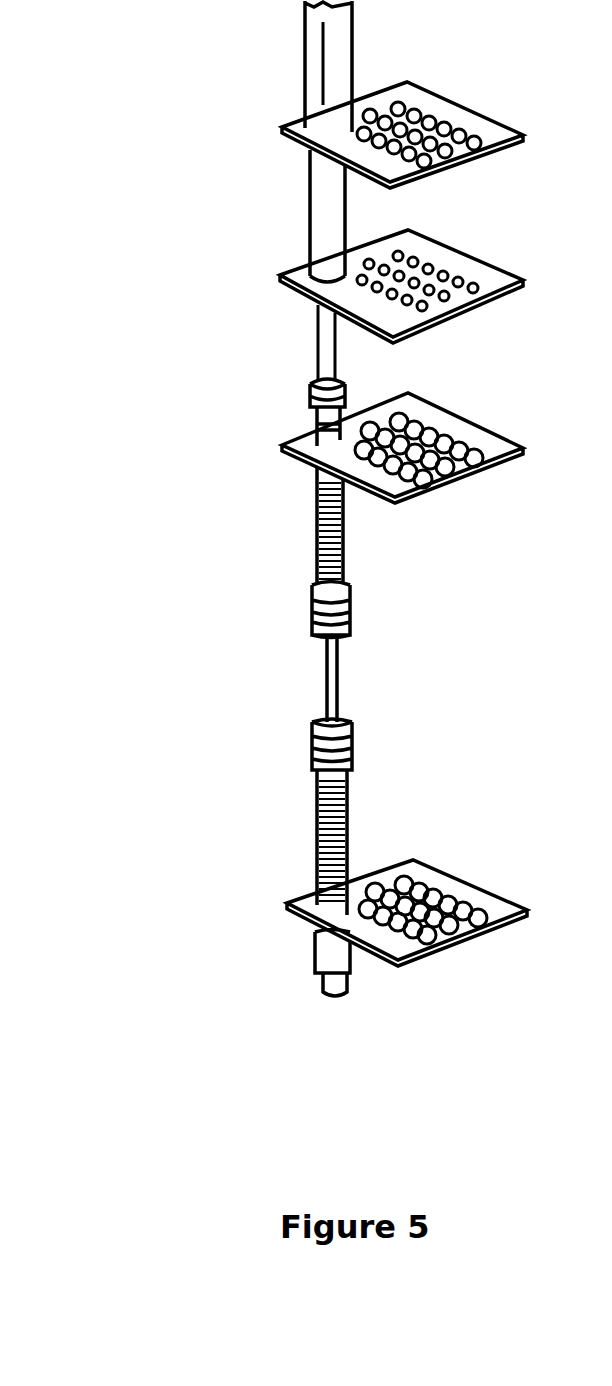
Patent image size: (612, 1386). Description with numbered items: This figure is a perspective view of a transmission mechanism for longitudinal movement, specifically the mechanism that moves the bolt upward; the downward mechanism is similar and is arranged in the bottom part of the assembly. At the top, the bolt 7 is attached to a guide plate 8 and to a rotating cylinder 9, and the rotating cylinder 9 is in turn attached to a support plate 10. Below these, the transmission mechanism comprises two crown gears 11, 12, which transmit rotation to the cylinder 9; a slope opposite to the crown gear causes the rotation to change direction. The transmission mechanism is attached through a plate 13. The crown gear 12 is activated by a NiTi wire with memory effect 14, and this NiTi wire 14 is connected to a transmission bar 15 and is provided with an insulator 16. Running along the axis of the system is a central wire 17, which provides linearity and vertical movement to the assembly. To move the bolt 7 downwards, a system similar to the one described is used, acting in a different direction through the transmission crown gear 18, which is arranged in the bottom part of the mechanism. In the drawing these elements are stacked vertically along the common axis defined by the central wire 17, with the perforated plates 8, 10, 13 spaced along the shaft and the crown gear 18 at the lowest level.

The bolt 7 is at (290, 49).
The guide plate 8 is at (258, 122).
The rotating cylinder 9 is at (288, 187).
The support plate 10 is at (265, 271).
The crown gear 11 is at (293, 387).
The crown gear 12 is at (291, 427).
The plate 13 is at (273, 449).
The NiTi wire with memory effect 14 is at (367, 547).
The transmission bar 15 is at (293, 497).
The insulator 16 is at (293, 599).
The central wire 17 is at (310, 676).
The transmission crown gear 18 is at (278, 906).